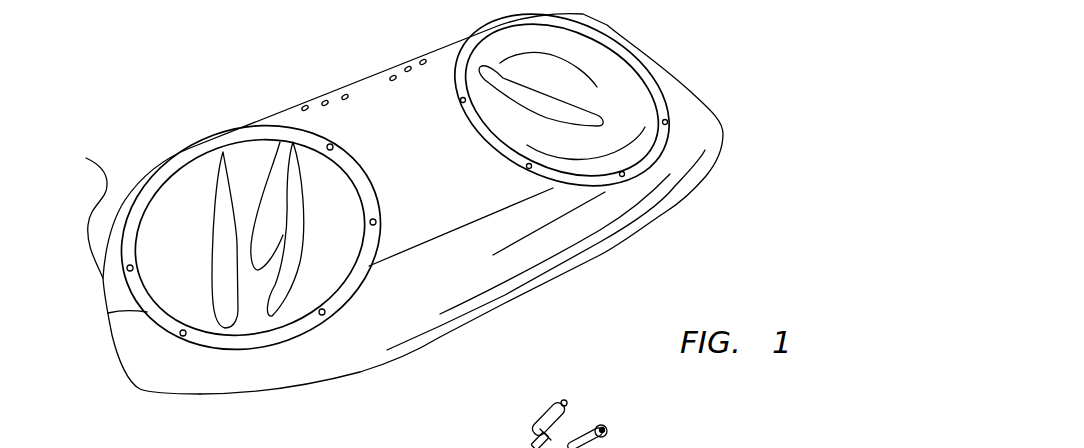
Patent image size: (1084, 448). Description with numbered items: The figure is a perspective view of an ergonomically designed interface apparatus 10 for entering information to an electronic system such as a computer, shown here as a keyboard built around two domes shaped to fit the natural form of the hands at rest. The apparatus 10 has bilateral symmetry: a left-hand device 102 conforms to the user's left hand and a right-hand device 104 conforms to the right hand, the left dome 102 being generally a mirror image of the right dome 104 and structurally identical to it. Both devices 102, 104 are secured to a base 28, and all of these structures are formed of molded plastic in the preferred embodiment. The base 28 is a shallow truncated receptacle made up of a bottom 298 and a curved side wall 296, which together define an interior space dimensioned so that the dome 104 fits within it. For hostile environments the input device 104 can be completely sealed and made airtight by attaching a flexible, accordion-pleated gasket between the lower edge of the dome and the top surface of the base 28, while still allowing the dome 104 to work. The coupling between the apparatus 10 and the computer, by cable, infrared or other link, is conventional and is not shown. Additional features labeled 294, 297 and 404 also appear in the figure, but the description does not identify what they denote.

The interface apparatus 10 is at (216, 95).
The base 28 is at (455, 202).
The left-hand device 102 is at (247, 157).
The right-hand device 104 is at (583, 53).
The handle 294 is at (72, 212).
The curved side wall 296 is at (632, 238).
The trim ring 297 is at (230, 342).
The bottom 298 is at (367, 371).
The grille ring 404 is at (630, 93).